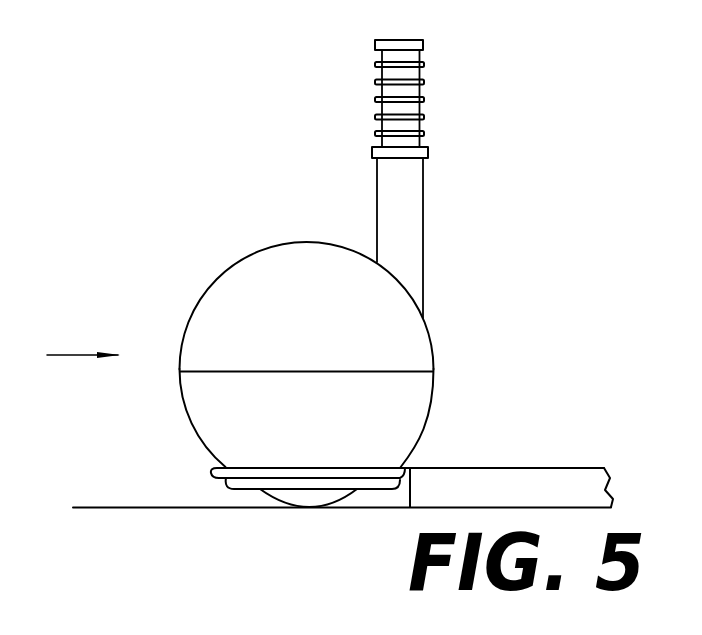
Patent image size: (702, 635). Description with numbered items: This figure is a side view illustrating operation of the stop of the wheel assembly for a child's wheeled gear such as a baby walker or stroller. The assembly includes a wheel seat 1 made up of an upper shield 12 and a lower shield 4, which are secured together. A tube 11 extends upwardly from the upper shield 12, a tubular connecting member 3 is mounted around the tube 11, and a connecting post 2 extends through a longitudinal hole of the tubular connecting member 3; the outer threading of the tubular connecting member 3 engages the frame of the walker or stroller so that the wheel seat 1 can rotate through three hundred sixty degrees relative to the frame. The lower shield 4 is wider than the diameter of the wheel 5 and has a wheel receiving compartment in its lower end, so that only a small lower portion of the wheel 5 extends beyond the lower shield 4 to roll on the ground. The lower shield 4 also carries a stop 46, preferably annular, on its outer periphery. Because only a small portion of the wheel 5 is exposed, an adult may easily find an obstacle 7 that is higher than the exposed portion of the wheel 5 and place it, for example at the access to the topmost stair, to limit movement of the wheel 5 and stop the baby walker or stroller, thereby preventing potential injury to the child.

The wheel seat 1 is at (440, 330).
The connecting post 2 is at (407, 43).
The tubular connecting member 3 is at (412, 120).
The lower shield 4 is at (222, 428).
The wheel 5 is at (322, 503).
The obstacle 7 is at (513, 473).
The tube 11 is at (410, 228).
The upper shield 12 is at (252, 267).
The stop 46 is at (400, 468).